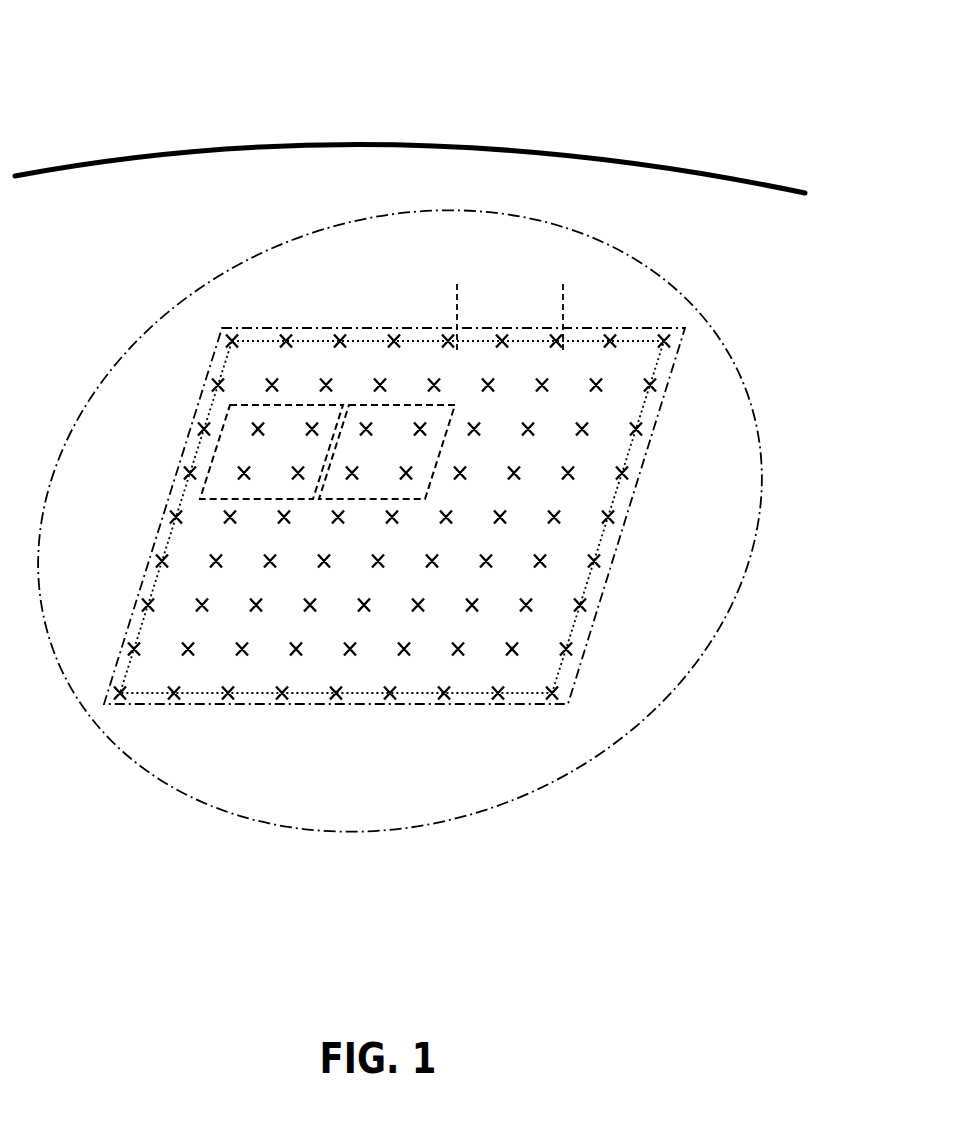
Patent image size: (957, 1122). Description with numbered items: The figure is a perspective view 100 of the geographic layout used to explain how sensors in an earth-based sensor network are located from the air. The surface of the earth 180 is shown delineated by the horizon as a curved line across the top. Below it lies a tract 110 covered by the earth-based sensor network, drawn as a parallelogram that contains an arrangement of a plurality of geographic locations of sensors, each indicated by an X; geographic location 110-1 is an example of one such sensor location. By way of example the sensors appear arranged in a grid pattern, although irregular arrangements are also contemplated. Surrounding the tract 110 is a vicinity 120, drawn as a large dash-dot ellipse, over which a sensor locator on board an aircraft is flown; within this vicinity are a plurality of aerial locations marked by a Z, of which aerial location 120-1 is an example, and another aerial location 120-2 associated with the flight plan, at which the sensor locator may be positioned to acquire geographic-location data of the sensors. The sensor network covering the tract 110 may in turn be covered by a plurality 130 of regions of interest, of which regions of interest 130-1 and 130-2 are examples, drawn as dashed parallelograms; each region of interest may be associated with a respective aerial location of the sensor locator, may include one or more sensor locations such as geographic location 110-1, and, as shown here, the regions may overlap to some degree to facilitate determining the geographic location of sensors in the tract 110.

The perspective view 100 is at (150, 80).
The surface of the earth 180 is at (633, 152).
The vicinity 120 is at (166, 326).
The aerial location 120-1 is at (566, 258).
The aerial location 120-2 is at (460, 258).
The tract 110 is at (249, 338).
The plurality of regions of interest 130 is at (167, 488).
The region of interest 130-1 is at (355, 402).
The region of interest 130-2 is at (250, 403).
The geographic location 110-1 is at (407, 463).